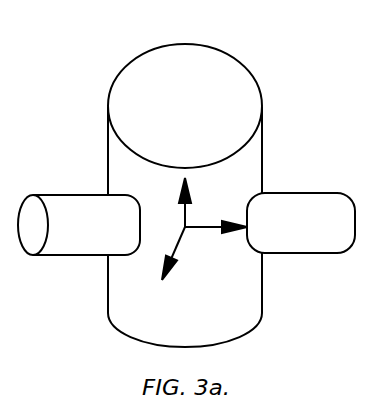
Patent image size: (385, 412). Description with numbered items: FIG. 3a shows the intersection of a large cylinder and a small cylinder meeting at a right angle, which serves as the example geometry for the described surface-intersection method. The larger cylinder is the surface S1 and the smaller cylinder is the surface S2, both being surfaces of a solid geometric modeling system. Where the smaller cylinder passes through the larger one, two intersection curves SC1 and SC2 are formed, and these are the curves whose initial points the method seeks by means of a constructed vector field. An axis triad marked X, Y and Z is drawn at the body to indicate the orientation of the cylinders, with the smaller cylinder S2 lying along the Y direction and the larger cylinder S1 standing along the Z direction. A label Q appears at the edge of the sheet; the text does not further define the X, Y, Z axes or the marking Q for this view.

The surface (larger cylinder) S1 is at (190, 106).
The surface (smaller cylinder) S2 is at (301, 208).
The intersection curve SC1 is at (79, 225).
The intersection curve SC2 is at (216, 247).
The X body axis X is at (166, 267).
The Y body axis Y is at (230, 231).
The Z body axis Z is at (194, 200).
The direction Q is at (378, 175).